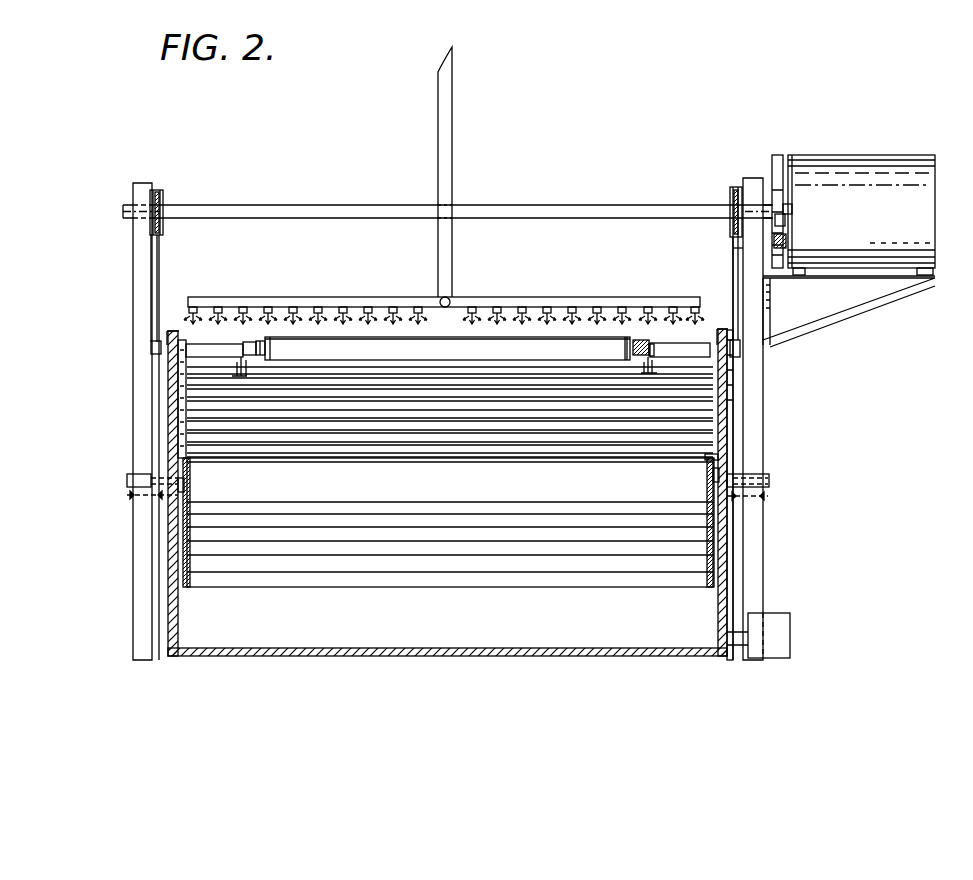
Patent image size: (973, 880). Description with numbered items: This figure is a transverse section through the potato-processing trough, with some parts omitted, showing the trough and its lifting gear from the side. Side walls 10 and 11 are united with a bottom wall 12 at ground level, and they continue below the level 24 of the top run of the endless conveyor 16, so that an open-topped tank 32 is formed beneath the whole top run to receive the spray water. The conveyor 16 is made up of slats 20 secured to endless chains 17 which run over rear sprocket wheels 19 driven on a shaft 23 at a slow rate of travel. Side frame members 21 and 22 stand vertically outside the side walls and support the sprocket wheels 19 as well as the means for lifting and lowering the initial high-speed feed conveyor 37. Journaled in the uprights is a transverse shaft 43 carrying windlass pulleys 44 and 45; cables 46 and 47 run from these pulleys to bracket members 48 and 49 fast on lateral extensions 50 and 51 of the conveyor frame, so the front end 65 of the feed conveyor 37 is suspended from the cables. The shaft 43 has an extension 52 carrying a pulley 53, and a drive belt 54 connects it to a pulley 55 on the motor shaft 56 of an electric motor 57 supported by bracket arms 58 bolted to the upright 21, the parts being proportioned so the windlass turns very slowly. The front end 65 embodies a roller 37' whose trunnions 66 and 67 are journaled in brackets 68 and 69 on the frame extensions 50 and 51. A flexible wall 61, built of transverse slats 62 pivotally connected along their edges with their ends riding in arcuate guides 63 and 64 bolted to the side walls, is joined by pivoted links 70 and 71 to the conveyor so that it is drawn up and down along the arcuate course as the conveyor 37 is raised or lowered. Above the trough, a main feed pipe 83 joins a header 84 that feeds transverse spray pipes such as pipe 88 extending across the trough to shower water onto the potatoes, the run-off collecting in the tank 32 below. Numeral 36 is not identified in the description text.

The side wall 10 is at (728, 378).
The side wall 11 is at (168, 394).
The bottom wall 12 is at (549, 652).
The endless conveyor 16 is at (446, 494).
The endless chains 17 is at (713, 537).
The rear sprocket wheels 19 is at (714, 475).
The slats 20 is at (318, 565).
The side frame member 21 is at (752, 400).
The side frame member 22 is at (142, 437).
The shaft 23 is at (128, 480).
The level of top run of conveyor 24 is at (718, 456).
The tank 32 is at (638, 669).
The flange 36 is at (172, 338).
The feed conveyor 37 is at (447, 292).
The roller 37' is at (620, 308).
The transverse shaft 43 is at (330, 210).
The windlass pulley 44 is at (163, 193).
The windlass pulley 45 is at (731, 196).
The cable 46 is at (161, 262).
The cable 47 is at (738, 252).
The bracket member 48 is at (738, 350).
The bracket member 49 is at (152, 347).
The lateral extension 50 is at (205, 348).
The lateral extension 51 is at (680, 348).
The shaft extension 52 is at (772, 182).
The pulley 53 is at (774, 160).
The drive belt 54 is at (780, 242).
The pulley 55 is at (782, 224).
The motor shaft 56 is at (792, 210).
The electric motor 57 is at (926, 200).
The bracket arms 58 is at (838, 282).
The flexible wall 61 is at (326, 454).
The transverse slats 62 is at (398, 392).
The arcuate guide 63 is at (731, 398).
The arcuate guide 64 is at (179, 372).
The front end of feed conveyor 65 is at (500, 355).
The trunnion 66 is at (260, 341).
The trunnion 67 is at (641, 352).
The bracket 68 is at (248, 342).
The bracket 69 is at (652, 356).
The link 70 is at (240, 376).
The link 71 is at (646, 373).
The main feed pipe 83 is at (455, 170).
The header 84 is at (450, 298).
The transverse pipe 88 is at (560, 298).